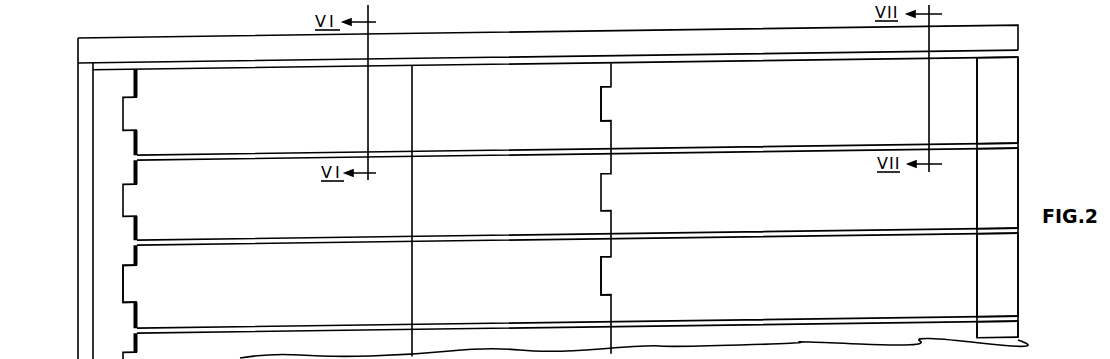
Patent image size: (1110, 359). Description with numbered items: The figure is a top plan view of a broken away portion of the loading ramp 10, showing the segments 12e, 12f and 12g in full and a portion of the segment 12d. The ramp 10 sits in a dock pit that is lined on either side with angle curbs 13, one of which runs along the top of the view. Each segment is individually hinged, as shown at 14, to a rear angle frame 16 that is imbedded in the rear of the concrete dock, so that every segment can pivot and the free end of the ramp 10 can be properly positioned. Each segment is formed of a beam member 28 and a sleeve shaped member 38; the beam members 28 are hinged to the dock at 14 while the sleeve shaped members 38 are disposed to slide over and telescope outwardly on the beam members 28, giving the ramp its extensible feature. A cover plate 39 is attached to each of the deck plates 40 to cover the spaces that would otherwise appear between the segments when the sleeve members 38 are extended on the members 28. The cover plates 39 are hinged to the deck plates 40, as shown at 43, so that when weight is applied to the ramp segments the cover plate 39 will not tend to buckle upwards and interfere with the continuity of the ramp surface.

The loading ramp 10 is at (1053, 140).
The segment 12g is at (1017, 72).
The segment 12f is at (1017, 172).
The segment 12e is at (1017, 252).
The segment 12d is at (1017, 328).
The angle curb 13 is at (850, 31).
The hinge 14 is at (130, 284).
The rear angle frame 16 is at (100, 85).
The beam member 28 is at (288, 116).
The sleeve shaped member 38 is at (815, 107).
The cover plate 39 is at (418, 113).
The deck plate 40 is at (715, 67).
The hinge 43 is at (604, 97).